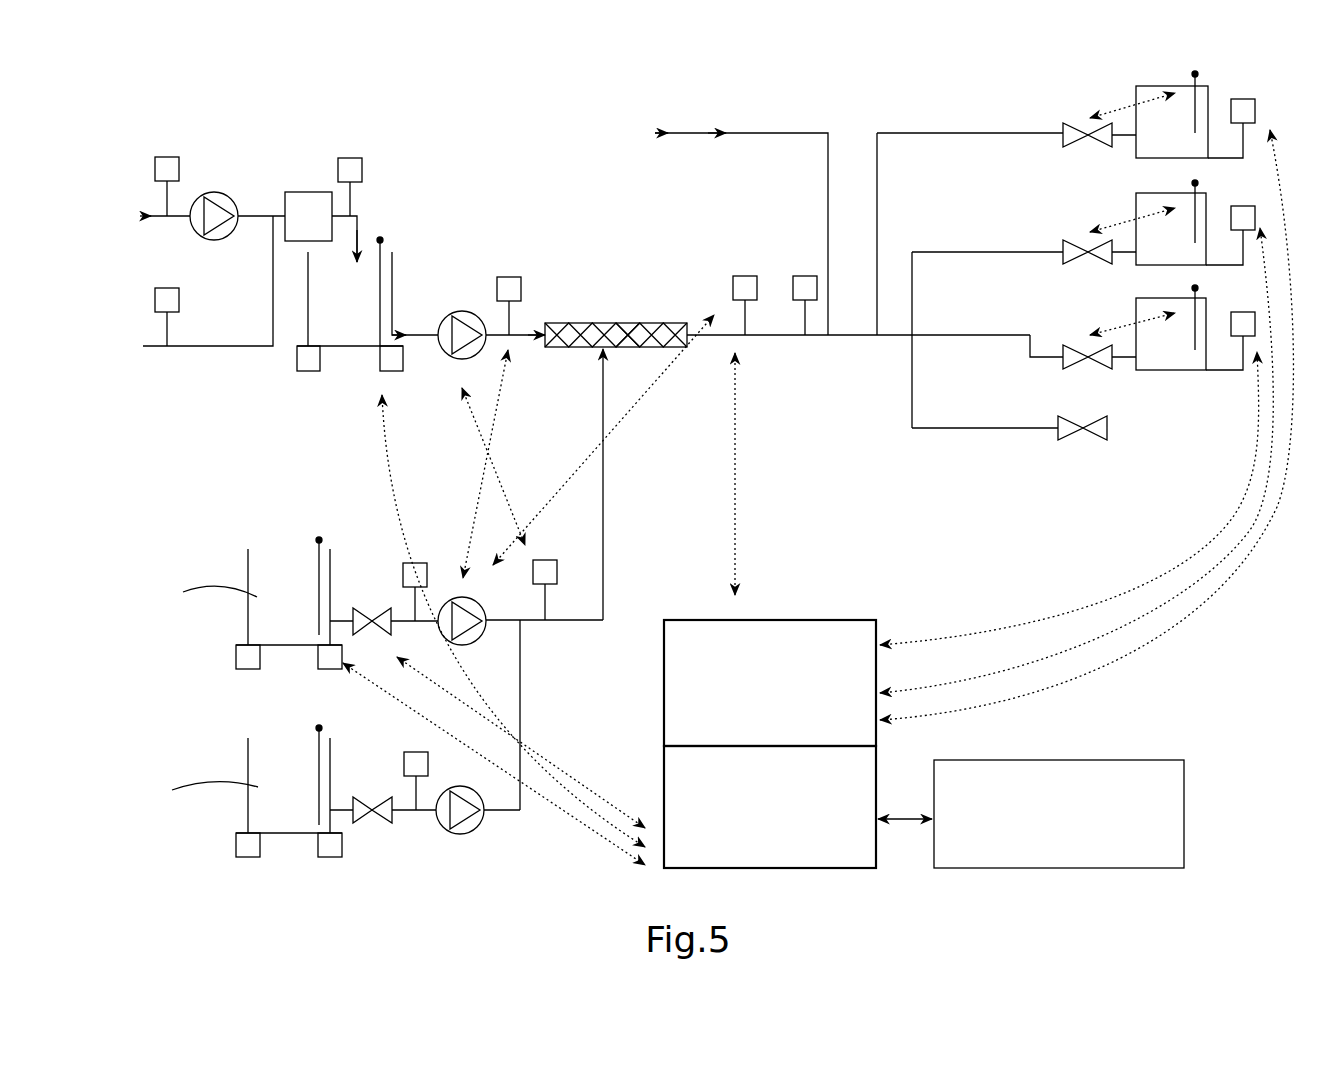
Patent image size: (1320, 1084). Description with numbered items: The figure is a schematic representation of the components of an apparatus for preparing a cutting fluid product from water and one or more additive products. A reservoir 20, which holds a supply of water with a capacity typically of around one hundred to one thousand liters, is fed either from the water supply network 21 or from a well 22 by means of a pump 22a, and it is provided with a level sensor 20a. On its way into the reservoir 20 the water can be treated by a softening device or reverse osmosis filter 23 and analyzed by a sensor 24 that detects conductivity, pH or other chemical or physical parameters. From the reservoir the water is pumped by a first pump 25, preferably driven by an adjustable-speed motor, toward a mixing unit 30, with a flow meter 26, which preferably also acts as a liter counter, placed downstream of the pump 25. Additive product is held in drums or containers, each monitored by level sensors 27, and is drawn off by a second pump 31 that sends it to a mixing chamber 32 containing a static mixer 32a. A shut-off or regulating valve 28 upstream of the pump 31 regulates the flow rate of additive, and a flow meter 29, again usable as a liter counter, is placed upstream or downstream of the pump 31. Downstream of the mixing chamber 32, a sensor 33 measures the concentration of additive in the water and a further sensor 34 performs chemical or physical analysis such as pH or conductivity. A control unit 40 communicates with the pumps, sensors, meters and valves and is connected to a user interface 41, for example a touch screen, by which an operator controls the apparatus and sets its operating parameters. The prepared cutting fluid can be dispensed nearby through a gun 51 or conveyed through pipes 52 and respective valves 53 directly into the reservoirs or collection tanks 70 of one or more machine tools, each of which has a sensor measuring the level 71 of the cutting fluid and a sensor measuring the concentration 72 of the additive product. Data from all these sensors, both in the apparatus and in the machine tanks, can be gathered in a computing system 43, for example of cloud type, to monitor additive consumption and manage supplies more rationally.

The reservoir 20 is at (347, 317).
The level sensor 20a is at (381, 238).
The water supply network 21 is at (165, 302).
The well 22 is at (168, 158).
The pump 22a is at (217, 197).
The reverse osmosis filter 23 is at (307, 203).
The sensor 24 is at (351, 167).
The first pump 25 is at (462, 312).
The flow meter 26 is at (508, 283).
The level sensors 27 is at (319, 540).
The shut-off valve 28 is at (372, 608).
The flow meter 29 is at (412, 570).
The mixing unit 30 is at (655, 372).
The second pump 31 is at (467, 635).
The mixing chamber 32 is at (583, 312).
The static mixer 32a is at (640, 332).
The sensor 33 is at (747, 283).
The further sensor 34 is at (802, 283).
The control unit 40 is at (637, 609).
The user interface 41 is at (978, 438).
The computing system 43 is at (1059, 814).
The gun 51 is at (1067, 432).
The pipes 52 is at (940, 133).
The valves 53 is at (1080, 124).
The collection tank 70 is at (1145, 93).
The level sensor 71 is at (1197, 72).
The concentration sensor 72 is at (1245, 107).